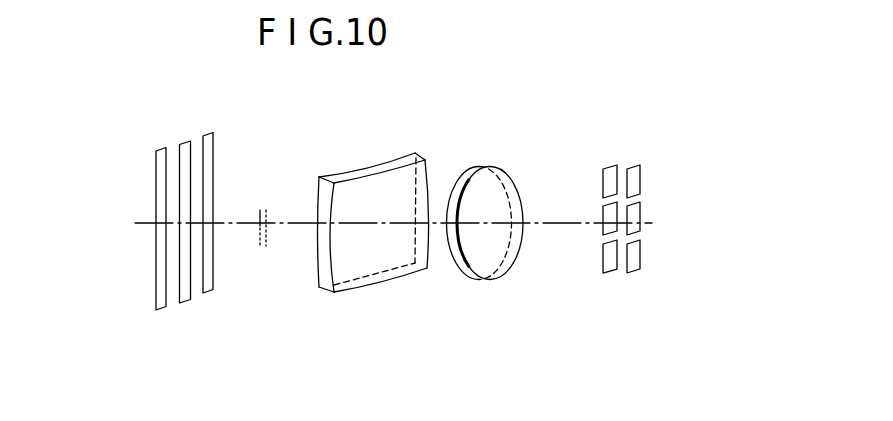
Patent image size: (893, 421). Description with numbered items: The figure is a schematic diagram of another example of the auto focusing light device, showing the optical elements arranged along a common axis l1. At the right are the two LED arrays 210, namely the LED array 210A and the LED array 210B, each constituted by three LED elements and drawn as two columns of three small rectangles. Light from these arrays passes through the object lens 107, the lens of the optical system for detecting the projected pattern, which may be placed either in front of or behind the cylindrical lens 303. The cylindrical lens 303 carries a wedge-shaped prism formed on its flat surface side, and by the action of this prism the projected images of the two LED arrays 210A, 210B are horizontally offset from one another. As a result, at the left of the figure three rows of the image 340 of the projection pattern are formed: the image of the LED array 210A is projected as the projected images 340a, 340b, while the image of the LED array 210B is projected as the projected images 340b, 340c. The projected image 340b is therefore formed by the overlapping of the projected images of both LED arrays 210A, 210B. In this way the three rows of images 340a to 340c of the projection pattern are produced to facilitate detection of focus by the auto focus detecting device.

The image of the projection pattern 340 is at (166, 215).
The projected image 340a is at (165, 149).
The projected image 340b is at (181, 141).
The projected image 340c is at (207, 131).
The cylindrical lens 303 is at (390, 283).
The object lens 107 is at (484, 167).
The LED arrays 210 is at (640, 211).
The LED array 210A is at (610, 163).
The LED array 210B is at (632, 163).
The optical axis l1 is at (553, 220).